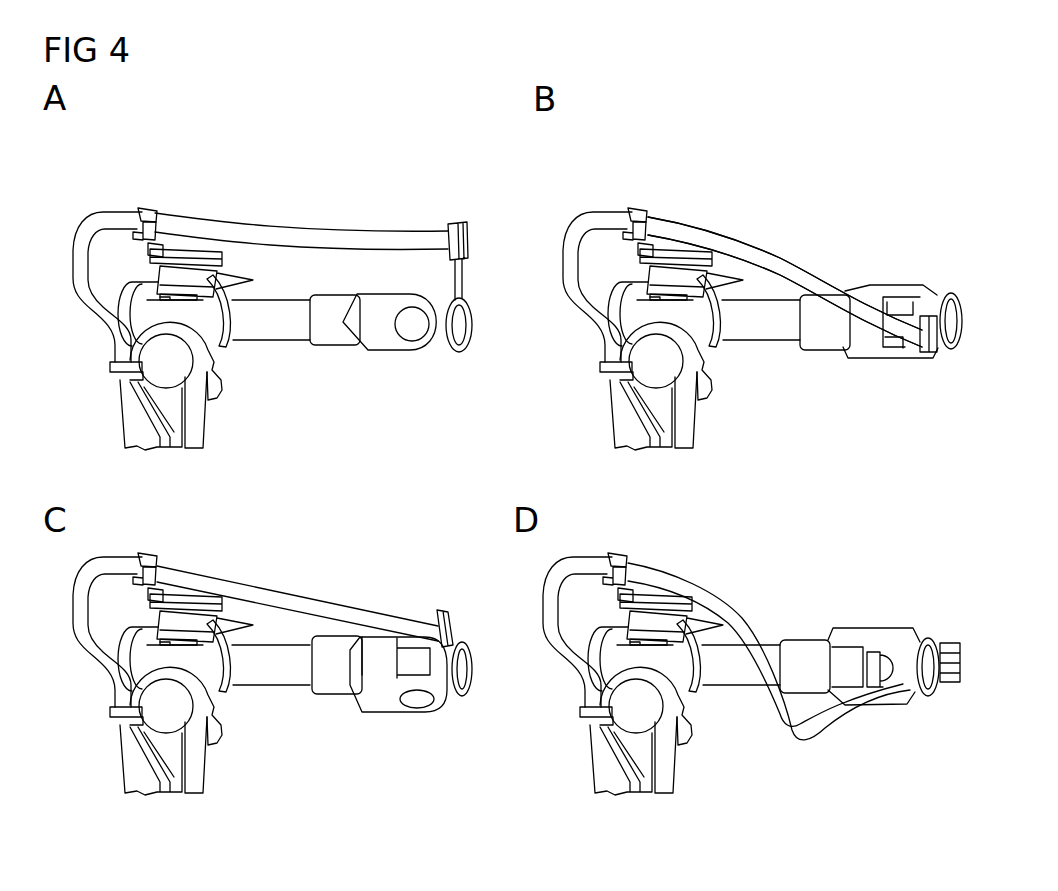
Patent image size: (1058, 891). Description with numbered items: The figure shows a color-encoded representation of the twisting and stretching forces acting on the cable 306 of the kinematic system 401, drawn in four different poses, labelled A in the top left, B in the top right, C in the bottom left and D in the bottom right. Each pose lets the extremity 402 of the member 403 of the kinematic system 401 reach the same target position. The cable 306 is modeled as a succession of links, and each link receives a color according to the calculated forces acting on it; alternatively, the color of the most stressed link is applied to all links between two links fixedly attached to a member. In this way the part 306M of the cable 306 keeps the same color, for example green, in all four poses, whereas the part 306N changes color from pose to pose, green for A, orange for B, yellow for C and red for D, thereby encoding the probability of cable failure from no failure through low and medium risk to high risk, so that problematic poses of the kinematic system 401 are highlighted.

The cable 306 is at (760, 222).
The part of the cable 306M is at (98, 328).
The part of the cable 306N is at (320, 222).
The kinematic system 401 is at (723, 716).
The extremity of the member 402 is at (926, 618).
The member 403 is at (908, 700).